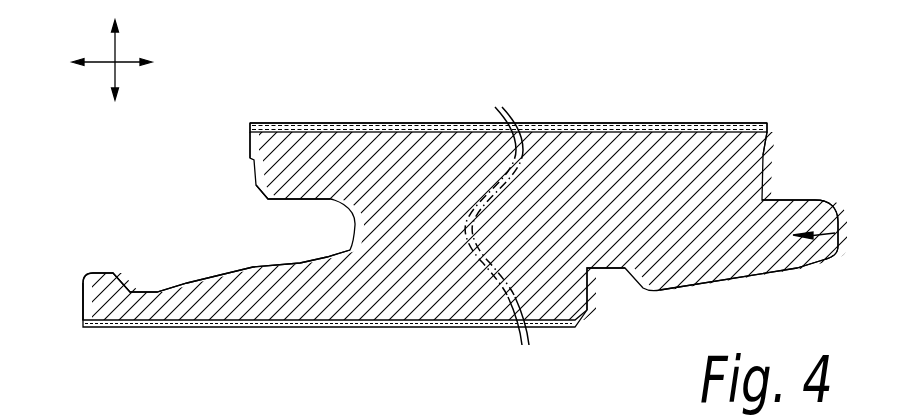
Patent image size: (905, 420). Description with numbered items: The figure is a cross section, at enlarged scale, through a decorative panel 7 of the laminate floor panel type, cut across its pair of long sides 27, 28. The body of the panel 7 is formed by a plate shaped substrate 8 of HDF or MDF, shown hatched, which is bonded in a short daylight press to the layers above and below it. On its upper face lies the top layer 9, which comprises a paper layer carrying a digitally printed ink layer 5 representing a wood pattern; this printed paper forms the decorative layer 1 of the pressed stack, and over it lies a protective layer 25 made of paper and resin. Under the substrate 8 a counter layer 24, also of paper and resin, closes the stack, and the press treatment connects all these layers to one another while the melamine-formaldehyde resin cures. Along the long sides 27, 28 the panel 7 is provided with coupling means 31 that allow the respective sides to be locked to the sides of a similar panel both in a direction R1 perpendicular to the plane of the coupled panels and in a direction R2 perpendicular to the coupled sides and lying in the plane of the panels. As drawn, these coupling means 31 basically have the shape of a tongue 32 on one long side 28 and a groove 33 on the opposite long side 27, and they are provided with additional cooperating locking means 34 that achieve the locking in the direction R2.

The decorative layer 1 is at (283, 133).
The digitally printed ink layer 5 is at (268, 124).
The decorative panel 7 is at (651, 111).
The substrate 8 is at (434, 250).
The top layer 9 is at (781, 131).
The counter layer 24 is at (362, 322).
The protective layer 25 is at (322, 123).
The long side 27 is at (126, 221).
The long side 28 is at (758, 302).
The coupling means 31 is at (168, 181).
The tongue 32 is at (837, 217).
The groove 33 is at (228, 250).
The locking means 34 is at (87, 295).
The direction perpendicular to the plane of the coupled panels R1 is at (115, 52).
The direction perpendicular to the coupled sides in the plane of the panels R2 is at (120, 65).